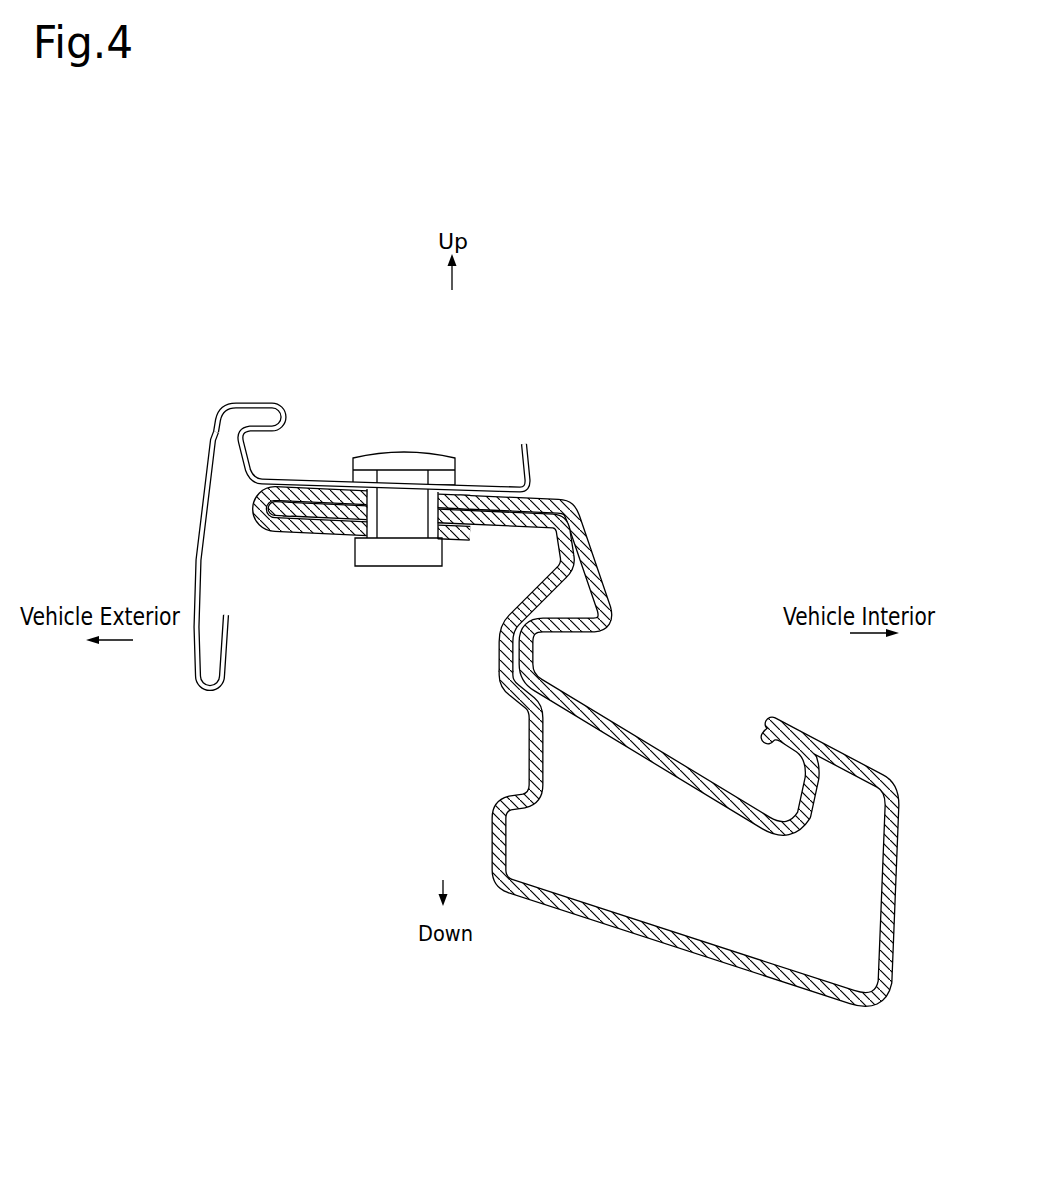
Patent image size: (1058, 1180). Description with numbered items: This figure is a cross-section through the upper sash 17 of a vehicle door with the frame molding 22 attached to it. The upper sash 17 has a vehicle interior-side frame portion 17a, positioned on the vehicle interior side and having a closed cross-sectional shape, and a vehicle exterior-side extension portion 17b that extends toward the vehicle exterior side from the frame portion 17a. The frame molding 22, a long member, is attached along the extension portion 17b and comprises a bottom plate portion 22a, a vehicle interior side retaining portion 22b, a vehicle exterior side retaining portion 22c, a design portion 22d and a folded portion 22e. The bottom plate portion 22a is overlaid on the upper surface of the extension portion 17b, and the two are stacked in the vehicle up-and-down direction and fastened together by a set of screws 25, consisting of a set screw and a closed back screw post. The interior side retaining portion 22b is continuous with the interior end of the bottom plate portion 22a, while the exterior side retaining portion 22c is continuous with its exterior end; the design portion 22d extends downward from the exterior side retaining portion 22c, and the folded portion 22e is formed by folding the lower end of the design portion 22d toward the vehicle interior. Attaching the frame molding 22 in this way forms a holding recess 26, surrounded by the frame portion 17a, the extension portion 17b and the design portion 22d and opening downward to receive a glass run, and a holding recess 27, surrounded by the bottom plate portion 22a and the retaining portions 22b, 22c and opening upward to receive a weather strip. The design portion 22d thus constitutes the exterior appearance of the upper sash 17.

The upper sash 17 is at (576, 725).
The vehicle interior-side frame portion 17a is at (552, 906).
The vehicle exterior-side extension portion 17b is at (487, 521).
The frame molding 22 is at (360, 502).
The bottom plate portion 22a is at (313, 481).
The vehicle interior side retaining portion 22b is at (532, 462).
The vehicle exterior side retaining portion 22c is at (281, 404).
The design portion 22d is at (202, 522).
The folded portion 22e is at (228, 636).
The set of screws 25 is at (408, 466).
The holding recess 26 is at (392, 664).
The holding recess 27 is at (475, 453).